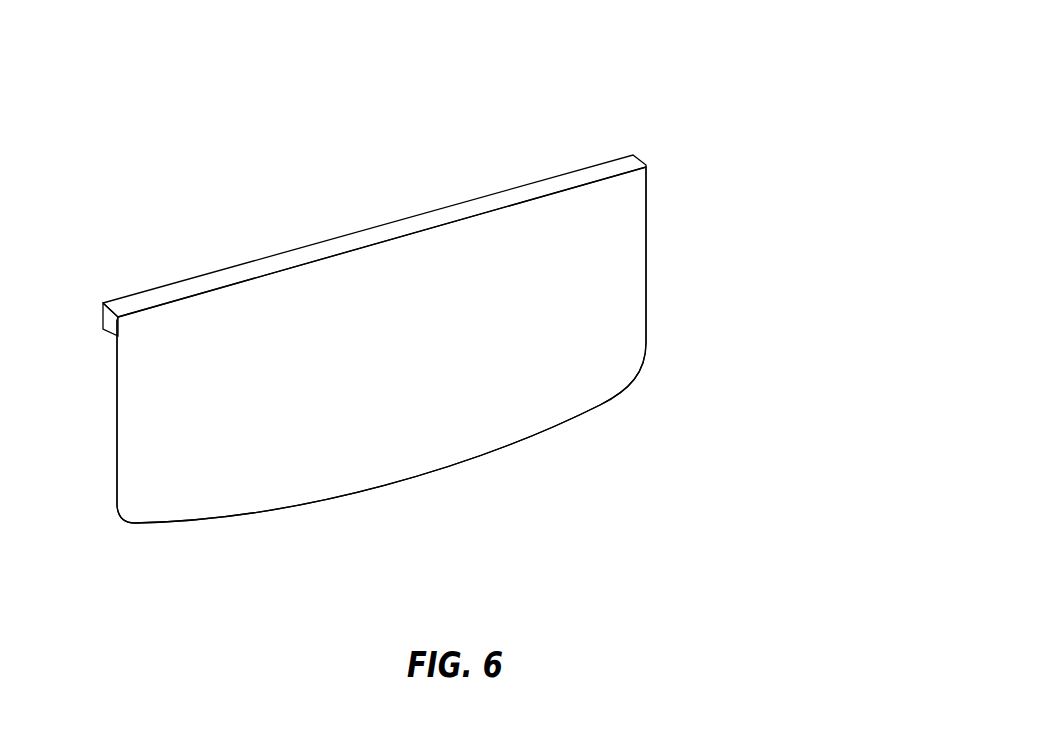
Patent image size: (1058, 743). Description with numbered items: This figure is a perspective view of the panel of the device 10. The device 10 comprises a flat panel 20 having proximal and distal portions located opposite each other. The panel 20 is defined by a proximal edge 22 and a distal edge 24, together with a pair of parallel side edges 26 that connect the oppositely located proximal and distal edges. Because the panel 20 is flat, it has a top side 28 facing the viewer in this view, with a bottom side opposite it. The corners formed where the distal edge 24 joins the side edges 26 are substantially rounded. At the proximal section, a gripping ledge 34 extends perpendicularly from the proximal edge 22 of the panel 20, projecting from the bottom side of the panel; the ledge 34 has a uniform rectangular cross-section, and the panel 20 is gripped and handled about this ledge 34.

The device 10 is at (777, 97).
The flat panel 20 is at (652, 297).
The proximal edge 22 is at (288, 251).
The distal edge 24 is at (417, 485).
The side edges 26 is at (117, 453).
The top side 28 is at (582, 255).
The gripping ledge 34 is at (103, 313).